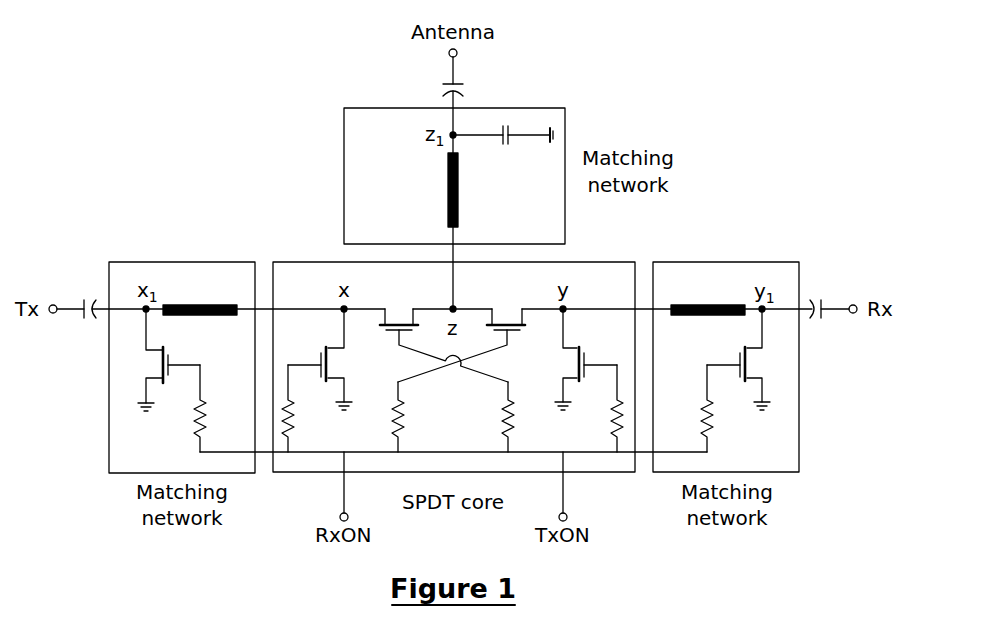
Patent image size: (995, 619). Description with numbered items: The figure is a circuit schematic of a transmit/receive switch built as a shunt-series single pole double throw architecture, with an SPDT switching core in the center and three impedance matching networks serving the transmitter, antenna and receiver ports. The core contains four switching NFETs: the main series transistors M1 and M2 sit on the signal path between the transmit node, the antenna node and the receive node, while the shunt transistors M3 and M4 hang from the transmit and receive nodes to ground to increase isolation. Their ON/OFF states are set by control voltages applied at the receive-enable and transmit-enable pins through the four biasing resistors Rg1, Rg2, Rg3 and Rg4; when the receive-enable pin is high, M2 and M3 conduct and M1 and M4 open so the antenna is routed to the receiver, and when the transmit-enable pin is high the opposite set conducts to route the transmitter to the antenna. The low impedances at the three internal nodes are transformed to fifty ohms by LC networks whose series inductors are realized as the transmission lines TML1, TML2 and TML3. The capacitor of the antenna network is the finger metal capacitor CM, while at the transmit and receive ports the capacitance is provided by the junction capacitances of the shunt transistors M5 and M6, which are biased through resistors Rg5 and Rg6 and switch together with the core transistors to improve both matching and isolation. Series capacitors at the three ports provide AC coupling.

The switching NFET M1 is at (444, 328).
The switching NFET M2 is at (461, 328).
The switching NFET M3 is at (332, 359).
The switching NFET M4 is at (573, 359).
The shunt transistor M5 is at (156, 360).
The shunt transistor M6 is at (750, 359).
The biasing resistor Rg1 is at (419, 417).
The biasing resistor Rg2 is at (489, 417).
The biasing resistor Rg3 is at (309, 408).
The biasing resistor Rg4 is at (599, 408).
The biasing resistor Rg5 is at (220, 408).
The biasing resistor Rg6 is at (727, 408).
The transmission line TML1 is at (200, 294).
The transmission line TML2 is at (418, 190).
The transmission line TML3 is at (708, 294).
The finger metal capacitor CM is at (503, 154).